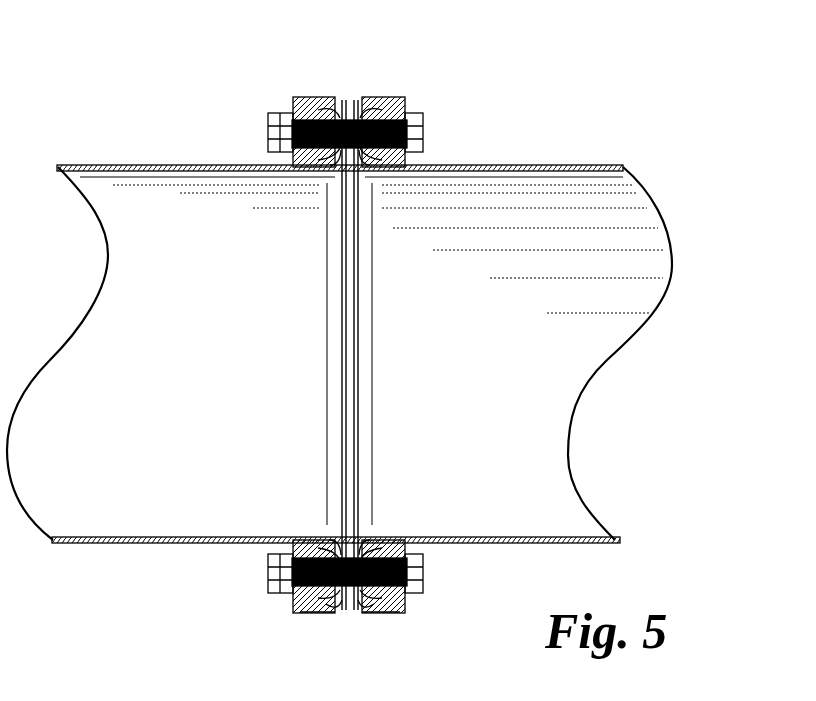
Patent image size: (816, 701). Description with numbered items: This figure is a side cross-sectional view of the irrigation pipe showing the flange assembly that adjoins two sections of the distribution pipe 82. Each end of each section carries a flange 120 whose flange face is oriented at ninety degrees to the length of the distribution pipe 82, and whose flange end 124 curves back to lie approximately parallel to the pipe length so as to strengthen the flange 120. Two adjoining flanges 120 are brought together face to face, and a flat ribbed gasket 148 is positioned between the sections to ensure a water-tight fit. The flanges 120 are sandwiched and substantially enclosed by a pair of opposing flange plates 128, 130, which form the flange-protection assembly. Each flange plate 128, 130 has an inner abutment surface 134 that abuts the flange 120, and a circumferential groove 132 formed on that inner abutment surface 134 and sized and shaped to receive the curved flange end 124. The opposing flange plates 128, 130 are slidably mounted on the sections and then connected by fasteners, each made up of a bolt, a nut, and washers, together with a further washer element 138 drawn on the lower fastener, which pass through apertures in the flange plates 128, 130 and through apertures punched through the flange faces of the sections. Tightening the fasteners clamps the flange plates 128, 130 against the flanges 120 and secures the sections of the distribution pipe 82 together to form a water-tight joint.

The distribution pipe 82 is at (135, 162).
The flange 120 is at (347, 94).
The flange plate 128 is at (300, 95).
The flange plate 130 is at (405, 95).
The flat ribbed gasket 148 is at (353, 248).
The washer 138 is at (290, 600).
The flange end 124 is at (320, 605).
The inner abutment surface 134 is at (357, 608).
The circumferential groove 132 is at (367, 612).